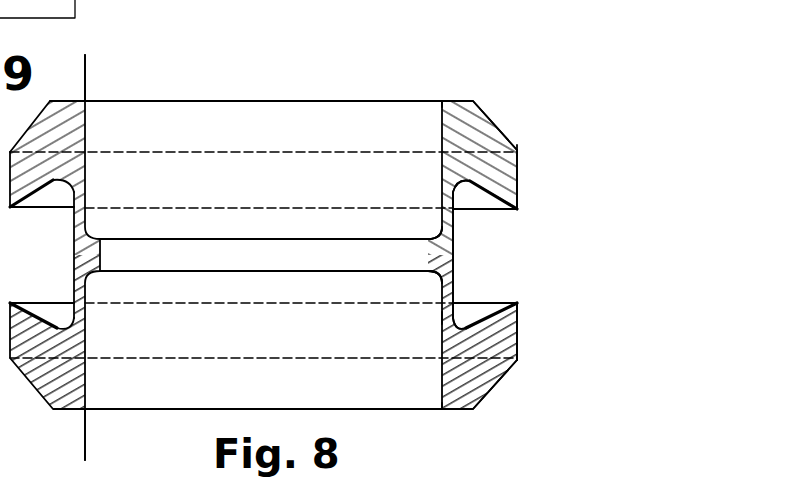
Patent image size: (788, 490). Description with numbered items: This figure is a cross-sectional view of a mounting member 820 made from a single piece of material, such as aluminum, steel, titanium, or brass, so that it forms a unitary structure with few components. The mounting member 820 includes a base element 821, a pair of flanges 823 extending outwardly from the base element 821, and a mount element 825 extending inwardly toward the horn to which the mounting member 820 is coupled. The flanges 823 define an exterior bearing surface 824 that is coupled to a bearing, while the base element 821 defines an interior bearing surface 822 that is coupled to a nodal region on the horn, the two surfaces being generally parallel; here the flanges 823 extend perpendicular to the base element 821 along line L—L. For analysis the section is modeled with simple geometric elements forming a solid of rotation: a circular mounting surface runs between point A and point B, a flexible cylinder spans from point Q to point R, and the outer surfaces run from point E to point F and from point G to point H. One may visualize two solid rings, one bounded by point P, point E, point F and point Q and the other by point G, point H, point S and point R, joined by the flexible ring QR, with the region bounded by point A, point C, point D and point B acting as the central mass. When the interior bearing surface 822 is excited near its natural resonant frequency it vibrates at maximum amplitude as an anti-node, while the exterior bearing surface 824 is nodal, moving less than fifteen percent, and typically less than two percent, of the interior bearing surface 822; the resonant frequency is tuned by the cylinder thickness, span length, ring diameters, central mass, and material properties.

The mounting member 820 is at (407, 44).
The base element 821 is at (443, 258).
The interior bearing surface 822 is at (438, 258).
The flanges 823 is at (488, 122).
The exterior bearing surface 824 is at (518, 168).
The mount element 825 is at (438, 266).
The point A is at (428, 237).
The point B is at (428, 274).
The point C is at (458, 184).
The point D is at (460, 328).
The point E is at (518, 150).
The point F is at (518, 210).
The point G is at (518, 303).
The point H is at (518, 361).
The point P is at (442, 100).
The point Q is at (450, 189).
The point R is at (443, 318).
The point S is at (443, 411).
The line L— L is at (86, 75).